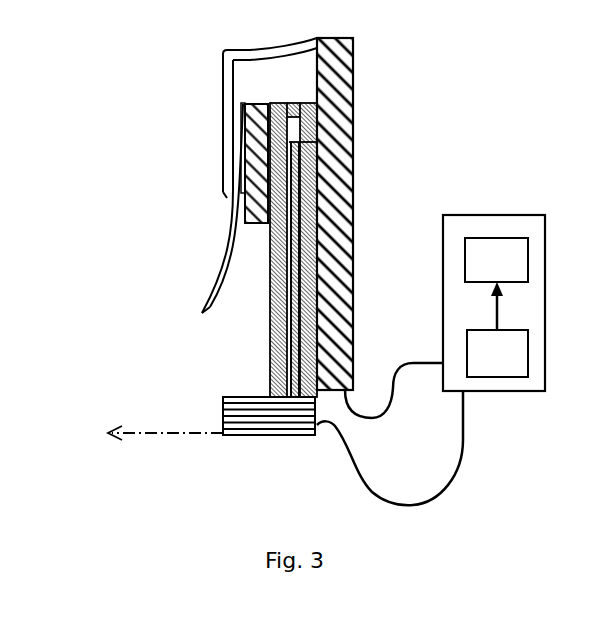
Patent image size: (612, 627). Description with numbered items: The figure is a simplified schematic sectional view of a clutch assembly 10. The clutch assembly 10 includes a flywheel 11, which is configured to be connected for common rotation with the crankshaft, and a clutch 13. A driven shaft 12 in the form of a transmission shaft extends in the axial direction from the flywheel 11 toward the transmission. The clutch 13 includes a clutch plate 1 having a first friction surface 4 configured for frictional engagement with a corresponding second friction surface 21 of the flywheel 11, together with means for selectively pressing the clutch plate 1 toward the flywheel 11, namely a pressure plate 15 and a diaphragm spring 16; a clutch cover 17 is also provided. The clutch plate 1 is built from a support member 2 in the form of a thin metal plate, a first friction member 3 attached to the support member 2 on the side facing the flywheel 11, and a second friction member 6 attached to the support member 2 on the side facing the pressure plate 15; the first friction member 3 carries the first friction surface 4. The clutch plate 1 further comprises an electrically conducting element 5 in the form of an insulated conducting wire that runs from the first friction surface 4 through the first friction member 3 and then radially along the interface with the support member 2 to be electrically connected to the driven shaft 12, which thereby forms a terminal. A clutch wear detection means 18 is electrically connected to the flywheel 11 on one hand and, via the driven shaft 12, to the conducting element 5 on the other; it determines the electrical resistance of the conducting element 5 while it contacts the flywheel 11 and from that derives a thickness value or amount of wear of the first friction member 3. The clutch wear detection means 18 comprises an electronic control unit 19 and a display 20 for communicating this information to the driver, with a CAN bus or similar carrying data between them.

The clutch plate 1 is at (270, 375).
The support member 2 is at (288, 102).
The first friction member 3 is at (306, 102).
The first friction surface 4 is at (318, 263).
The electrically conducting element 5 is at (298, 143).
The second friction member 6 is at (272, 326).
The clutch assembly 10 is at (118, 74).
The flywheel 11 is at (355, 104).
The driven shaft 12 is at (257, 435).
The clutch 13 is at (208, 95).
The pressure plate 15 is at (222, 72).
The diaphragm spring 16 is at (229, 247).
The clutch cover 17 is at (222, 128).
The clutch wear detection means 18 is at (500, 215).
The electronic control unit 19 is at (482, 366).
The display 20 is at (482, 272).
The second friction surface 21 is at (317, 274).